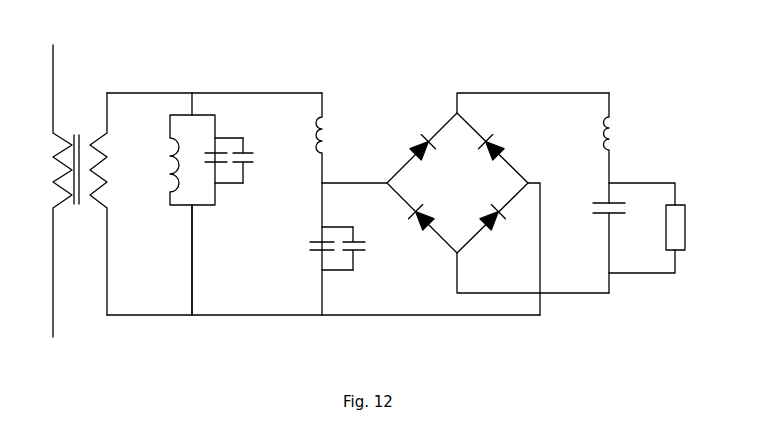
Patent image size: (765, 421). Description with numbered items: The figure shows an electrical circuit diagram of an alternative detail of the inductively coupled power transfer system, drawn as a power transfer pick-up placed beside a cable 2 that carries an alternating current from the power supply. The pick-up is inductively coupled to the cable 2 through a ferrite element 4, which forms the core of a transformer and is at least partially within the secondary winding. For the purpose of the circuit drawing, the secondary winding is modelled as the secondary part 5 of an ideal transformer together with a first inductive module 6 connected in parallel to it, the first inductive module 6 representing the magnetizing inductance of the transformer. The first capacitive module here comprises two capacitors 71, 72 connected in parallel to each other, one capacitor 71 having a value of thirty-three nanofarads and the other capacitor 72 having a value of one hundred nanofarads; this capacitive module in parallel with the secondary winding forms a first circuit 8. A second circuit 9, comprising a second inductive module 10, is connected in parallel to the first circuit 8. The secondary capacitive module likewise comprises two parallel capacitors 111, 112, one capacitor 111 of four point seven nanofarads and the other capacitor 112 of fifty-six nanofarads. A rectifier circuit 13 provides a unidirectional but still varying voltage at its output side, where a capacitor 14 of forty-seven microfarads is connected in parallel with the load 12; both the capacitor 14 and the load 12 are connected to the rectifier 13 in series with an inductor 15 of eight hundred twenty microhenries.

The cable 2 is at (53, 320).
The ferrite element 4 is at (76, 136).
The secondary part of the ideal transformer 5 is at (107, 143).
The first inductive module 6 is at (162, 133).
The capacitor 72 is at (218, 150).
The capacitor 71 is at (246, 150).
The first circuit 8 is at (218, 208).
The second inductive module 10 is at (330, 120).
The second circuit 9 is at (340, 178).
The capacitor 112 is at (330, 255).
The capacitor 111 is at (368, 250).
The rectifier circuit 13 is at (437, 238).
The inductor 15 is at (613, 122).
The capacitor 14 is at (615, 217).
The load 12 is at (685, 225).